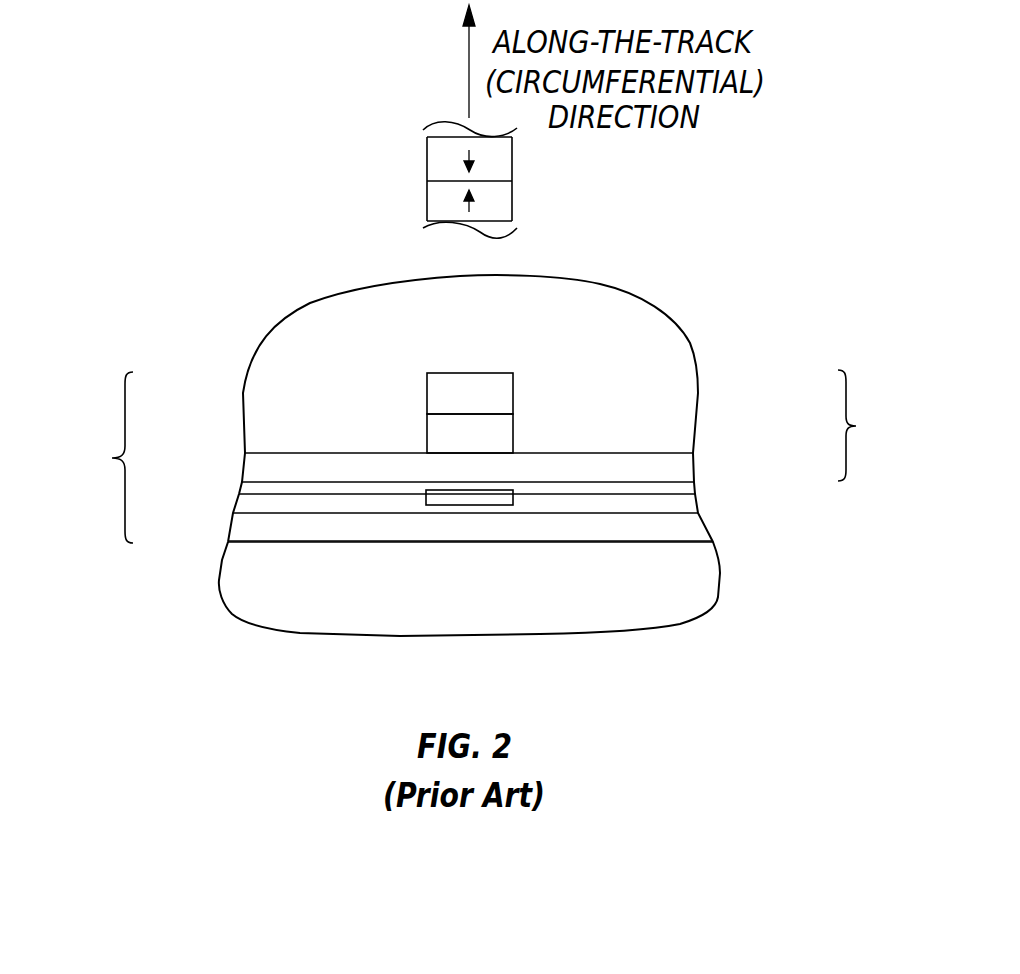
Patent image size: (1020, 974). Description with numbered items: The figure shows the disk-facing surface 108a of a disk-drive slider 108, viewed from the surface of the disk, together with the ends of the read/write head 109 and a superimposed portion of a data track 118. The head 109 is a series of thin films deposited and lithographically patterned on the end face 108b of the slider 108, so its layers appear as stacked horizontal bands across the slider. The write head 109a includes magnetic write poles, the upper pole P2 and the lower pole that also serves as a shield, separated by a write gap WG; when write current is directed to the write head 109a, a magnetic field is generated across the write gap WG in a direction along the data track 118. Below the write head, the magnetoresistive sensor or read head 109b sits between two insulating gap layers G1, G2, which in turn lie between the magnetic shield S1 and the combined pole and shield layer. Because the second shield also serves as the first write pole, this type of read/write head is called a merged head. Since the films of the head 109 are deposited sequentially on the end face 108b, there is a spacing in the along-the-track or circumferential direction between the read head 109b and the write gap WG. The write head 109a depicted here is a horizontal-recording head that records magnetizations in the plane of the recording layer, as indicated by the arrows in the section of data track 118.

The data track 118 is at (440, 168).
The slider 108 is at (265, 620).
The disk-facing surface 108a is at (385, 417).
The end face 108b is at (238, 538).
The head 109 is at (95, 457).
The write head 109a is at (881, 425).
The read head 109b is at (497, 500).
The write pole P2 is at (502, 395).
The write gap WG is at (502, 434).
The second insulating gap layer G2 is at (680, 488).
The first insulating gap layer G1 is at (688, 507).
The first magnetic shield S1 is at (314, 537).